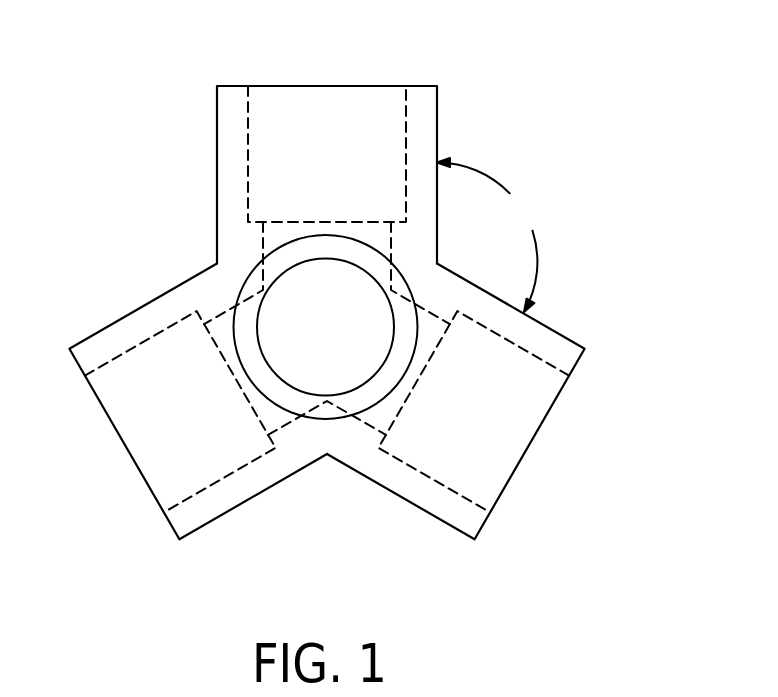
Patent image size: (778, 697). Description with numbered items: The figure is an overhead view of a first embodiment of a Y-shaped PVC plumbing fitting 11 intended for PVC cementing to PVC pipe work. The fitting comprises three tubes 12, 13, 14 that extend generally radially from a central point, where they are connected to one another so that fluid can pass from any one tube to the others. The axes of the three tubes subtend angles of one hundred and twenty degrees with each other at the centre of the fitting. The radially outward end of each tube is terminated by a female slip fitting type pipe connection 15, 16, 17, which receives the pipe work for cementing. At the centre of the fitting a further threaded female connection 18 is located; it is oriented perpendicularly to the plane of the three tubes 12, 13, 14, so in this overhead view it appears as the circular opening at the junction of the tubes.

The Y shaped PVC plumbing fitting 11 is at (134, 78).
The tube 12 is at (437, 125).
The tube 13 is at (548, 328).
The tube 14 is at (243, 507).
The female slip fitting type pipe connection 15 is at (405, 108).
The female slip fitting type pipe connection 16 is at (450, 493).
The female slip fitting type pipe connection 17 is at (200, 495).
The threaded female connection 18 is at (268, 288).